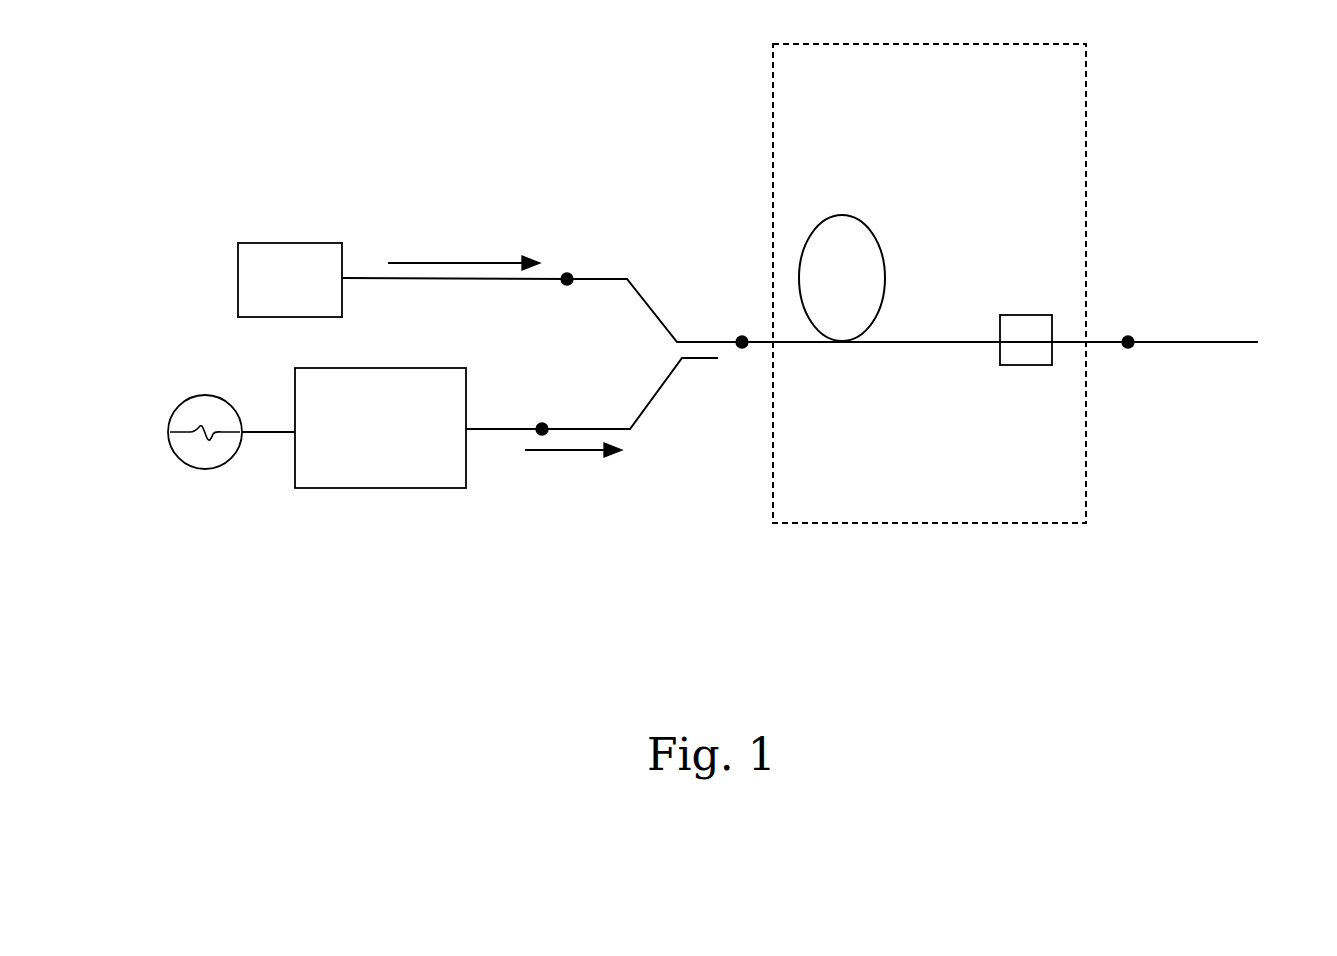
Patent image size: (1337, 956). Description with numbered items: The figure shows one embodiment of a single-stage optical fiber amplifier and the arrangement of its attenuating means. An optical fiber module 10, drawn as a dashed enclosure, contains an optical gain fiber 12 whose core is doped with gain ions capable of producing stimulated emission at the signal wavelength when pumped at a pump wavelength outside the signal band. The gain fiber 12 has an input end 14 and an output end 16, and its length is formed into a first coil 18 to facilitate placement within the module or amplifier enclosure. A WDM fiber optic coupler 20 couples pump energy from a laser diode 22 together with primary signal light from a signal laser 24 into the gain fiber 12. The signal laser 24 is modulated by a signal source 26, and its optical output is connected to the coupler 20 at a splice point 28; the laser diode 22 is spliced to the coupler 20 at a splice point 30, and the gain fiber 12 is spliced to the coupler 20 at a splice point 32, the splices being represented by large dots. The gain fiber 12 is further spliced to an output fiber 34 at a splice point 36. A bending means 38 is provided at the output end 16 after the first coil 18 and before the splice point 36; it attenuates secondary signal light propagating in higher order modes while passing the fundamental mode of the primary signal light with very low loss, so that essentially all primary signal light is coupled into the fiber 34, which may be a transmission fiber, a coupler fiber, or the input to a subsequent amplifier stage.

The optical fiber module 10 is at (817, 520).
The optical gain fiber 12 is at (903, 350).
The input end 14 is at (785, 343).
The output end 16 is at (1068, 343).
The first coil 18 is at (862, 215).
The WDM fiber optic coupler 20 is at (690, 369).
The laser diode 22 is at (267, 243).
The signal laser 24 is at (355, 488).
The signal source 26 is at (198, 470).
The splice point 28 is at (542, 429).
The splice point 30 is at (567, 279).
The splice point 32 is at (742, 338).
The fiber 34 is at (1180, 343).
The splice point 36 is at (1128, 342).
The bending means 38 is at (1026, 292).